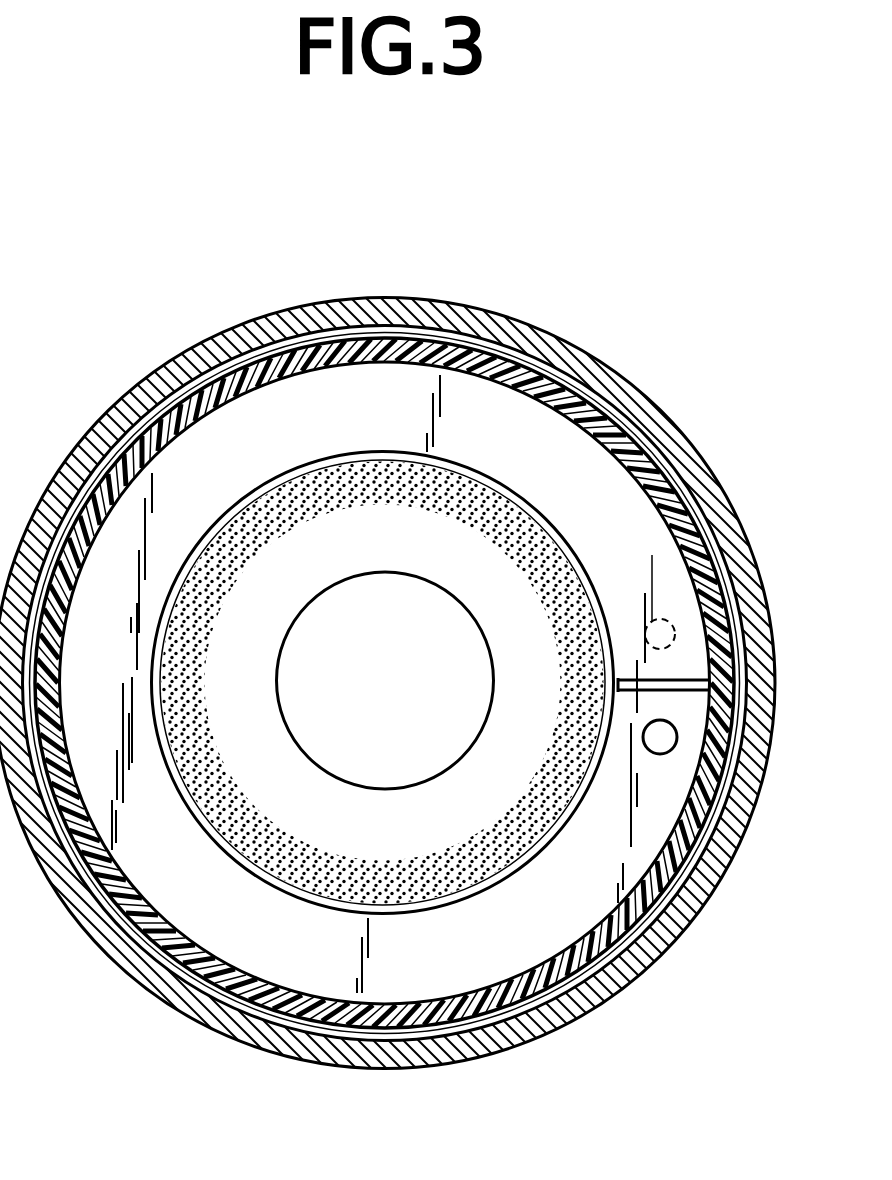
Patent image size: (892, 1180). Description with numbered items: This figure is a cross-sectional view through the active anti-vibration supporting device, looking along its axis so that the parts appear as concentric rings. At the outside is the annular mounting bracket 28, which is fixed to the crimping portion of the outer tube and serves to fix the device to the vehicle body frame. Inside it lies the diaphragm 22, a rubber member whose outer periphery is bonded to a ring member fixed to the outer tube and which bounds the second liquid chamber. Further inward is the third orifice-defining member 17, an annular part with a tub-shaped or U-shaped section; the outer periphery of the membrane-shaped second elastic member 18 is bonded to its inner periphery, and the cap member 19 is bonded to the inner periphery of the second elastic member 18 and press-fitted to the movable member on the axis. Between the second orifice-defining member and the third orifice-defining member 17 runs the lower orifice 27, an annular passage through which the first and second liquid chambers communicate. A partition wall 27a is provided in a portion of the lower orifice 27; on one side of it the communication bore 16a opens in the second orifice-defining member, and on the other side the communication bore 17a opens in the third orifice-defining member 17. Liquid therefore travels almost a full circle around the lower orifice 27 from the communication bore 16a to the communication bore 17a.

The mounting bracket 28 is at (598, 365).
The diaphragm 22 is at (225, 385).
The lower orifice 27 is at (355, 442).
The third orifice-defining member 17 is at (384, 466).
The second elastic member 18 is at (300, 808).
The cap member 19 is at (415, 708).
The partition wall 27a is at (619, 692).
The communication bore 16a is at (643, 618).
The communication bore 17a is at (645, 745).